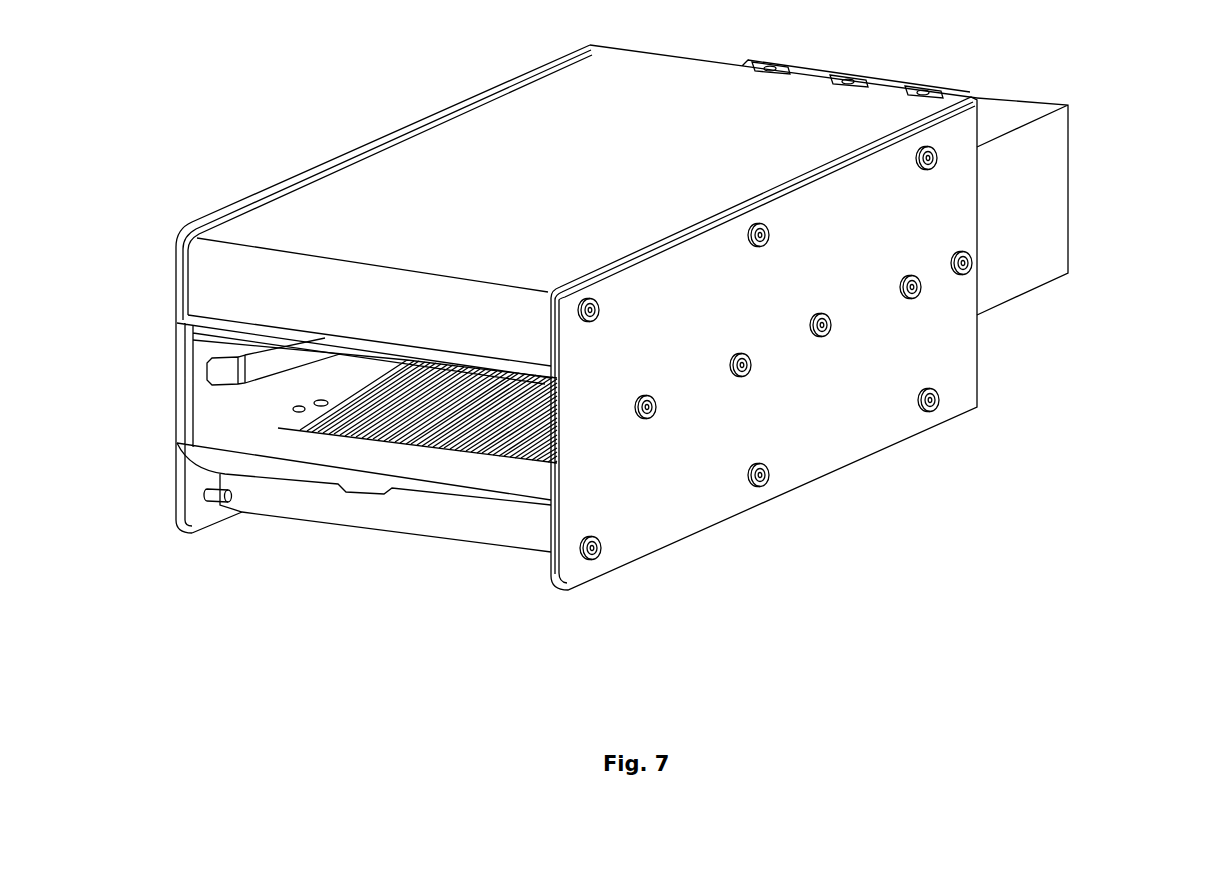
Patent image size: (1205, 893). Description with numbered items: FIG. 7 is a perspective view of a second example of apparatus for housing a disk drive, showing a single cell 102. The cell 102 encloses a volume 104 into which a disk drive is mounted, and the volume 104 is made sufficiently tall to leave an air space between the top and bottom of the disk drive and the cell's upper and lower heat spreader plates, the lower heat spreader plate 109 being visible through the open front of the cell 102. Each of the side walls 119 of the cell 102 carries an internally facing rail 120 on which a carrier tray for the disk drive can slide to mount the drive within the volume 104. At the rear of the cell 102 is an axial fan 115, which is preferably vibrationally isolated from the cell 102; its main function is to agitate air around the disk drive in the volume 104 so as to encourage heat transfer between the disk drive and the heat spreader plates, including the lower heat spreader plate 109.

The cell 102 is at (177, 268).
The side wall 119 is at (175, 340).
The internally facing rail 120 is at (229, 372).
The volume 104 is at (215, 420).
The lower heat spreader plate 109 is at (338, 403).
The axial fan 115 is at (1070, 189).